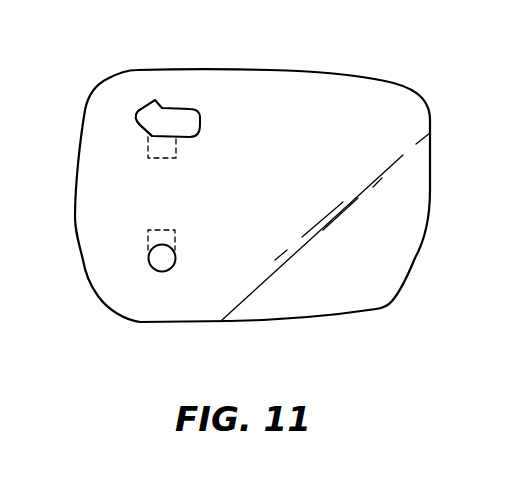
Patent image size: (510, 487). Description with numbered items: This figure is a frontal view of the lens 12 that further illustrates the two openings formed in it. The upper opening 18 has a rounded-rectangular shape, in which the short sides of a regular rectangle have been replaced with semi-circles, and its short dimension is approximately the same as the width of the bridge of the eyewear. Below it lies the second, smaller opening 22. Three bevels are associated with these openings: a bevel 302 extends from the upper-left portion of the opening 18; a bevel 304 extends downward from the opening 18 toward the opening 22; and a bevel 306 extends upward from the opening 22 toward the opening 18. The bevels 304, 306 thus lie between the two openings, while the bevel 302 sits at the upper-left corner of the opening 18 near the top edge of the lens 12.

The lens 12 is at (312, 70).
The opening 18 is at (183, 117).
The opening 22 is at (170, 258).
The bevel 302 is at (140, 108).
The bevel 304 is at (177, 152).
The bevel 306 is at (168, 230).